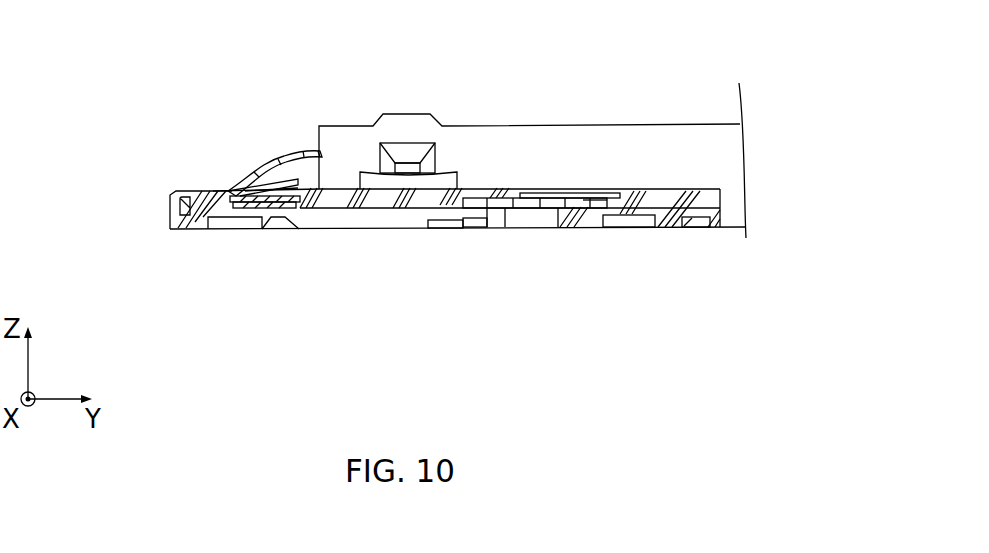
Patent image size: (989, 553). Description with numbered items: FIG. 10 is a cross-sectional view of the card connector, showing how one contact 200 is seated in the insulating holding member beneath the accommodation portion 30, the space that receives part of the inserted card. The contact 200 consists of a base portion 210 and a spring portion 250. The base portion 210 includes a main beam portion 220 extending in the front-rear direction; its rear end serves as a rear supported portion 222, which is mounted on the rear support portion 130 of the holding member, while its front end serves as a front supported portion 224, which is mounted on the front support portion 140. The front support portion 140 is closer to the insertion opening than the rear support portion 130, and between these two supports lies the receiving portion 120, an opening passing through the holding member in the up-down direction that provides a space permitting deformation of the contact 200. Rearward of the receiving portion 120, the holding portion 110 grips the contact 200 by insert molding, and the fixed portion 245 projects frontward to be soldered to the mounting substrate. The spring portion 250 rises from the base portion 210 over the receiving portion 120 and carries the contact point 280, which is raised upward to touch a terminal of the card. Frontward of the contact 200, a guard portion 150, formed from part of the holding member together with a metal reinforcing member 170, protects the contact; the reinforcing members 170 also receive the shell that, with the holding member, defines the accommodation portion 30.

The accommodation portion 30 is at (657, 148).
The holding portion 110 is at (530, 217).
The receiving portion 120 is at (352, 238).
The rear support portion 130 is at (598, 200).
The front support portion 140 is at (240, 191).
The guard portion 150 is at (172, 205).
The reinforcing member 170 is at (520, 153).
The contact 200 is at (292, 109).
The base portion 210 is at (510, 125).
The main beam portion 220 is at (487, 199).
The rear supported portion 222 is at (583, 200).
The front supported portion 224 is at (250, 203).
The fixed portion 245 is at (440, 227).
The spring portion 250 is at (268, 148).
The contact point 280 is at (297, 152).